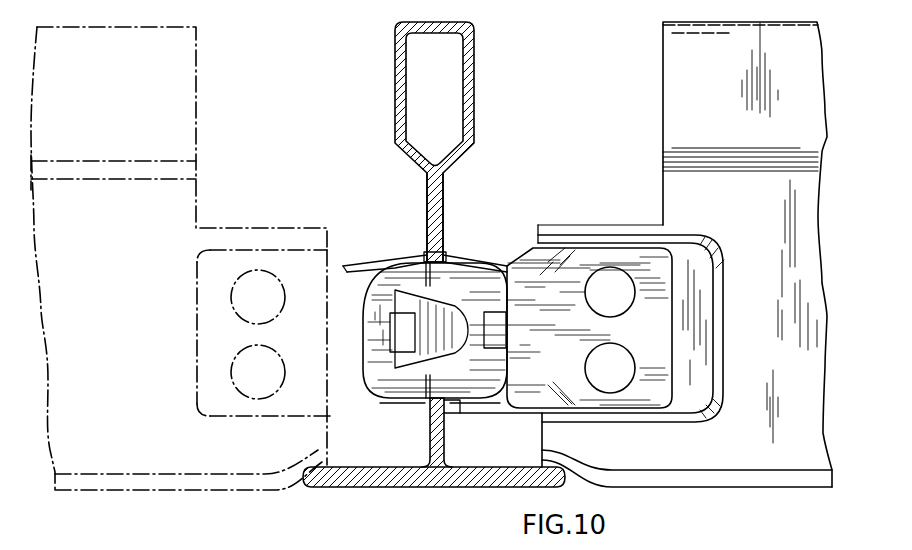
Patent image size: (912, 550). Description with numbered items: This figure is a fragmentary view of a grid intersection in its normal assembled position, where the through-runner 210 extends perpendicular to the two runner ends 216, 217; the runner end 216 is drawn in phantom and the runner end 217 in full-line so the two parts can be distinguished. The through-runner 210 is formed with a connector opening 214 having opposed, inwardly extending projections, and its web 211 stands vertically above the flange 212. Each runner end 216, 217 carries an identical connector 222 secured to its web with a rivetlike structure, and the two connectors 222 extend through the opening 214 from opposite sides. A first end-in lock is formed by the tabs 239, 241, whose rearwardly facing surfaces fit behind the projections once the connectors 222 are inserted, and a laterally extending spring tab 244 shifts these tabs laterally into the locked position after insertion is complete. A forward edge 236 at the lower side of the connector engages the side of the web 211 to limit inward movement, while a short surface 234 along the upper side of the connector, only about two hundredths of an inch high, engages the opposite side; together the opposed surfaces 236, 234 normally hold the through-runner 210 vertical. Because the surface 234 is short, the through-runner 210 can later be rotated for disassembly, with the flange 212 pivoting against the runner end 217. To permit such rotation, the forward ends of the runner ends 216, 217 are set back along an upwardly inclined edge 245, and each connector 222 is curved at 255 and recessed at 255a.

The through-runner 210 is at (478, 55).
The web 211 is at (443, 200).
The flange 212 is at (492, 487).
The connector opening 214 is at (413, 400).
The runner end 216 is at (206, 197).
The runner end 217 is at (660, 128).
The connector 222 is at (337, 245).
The surface 234 is at (425, 257).
The forward edge 236 is at (449, 407).
The tab 239 is at (430, 274).
The tab 241 is at (393, 403).
The spring tab 244 is at (470, 308).
The upwardly inclined edge 245 is at (196, 85).
The curved portion of connector 255 is at (425, 270).
The recess 255a is at (380, 262).